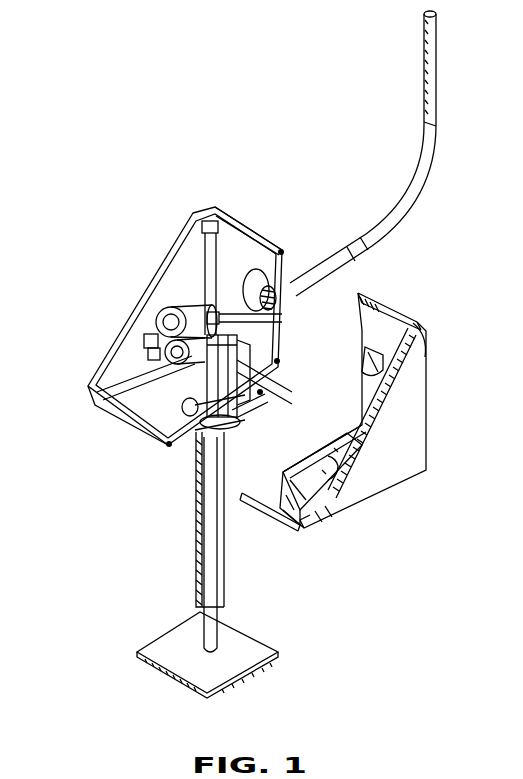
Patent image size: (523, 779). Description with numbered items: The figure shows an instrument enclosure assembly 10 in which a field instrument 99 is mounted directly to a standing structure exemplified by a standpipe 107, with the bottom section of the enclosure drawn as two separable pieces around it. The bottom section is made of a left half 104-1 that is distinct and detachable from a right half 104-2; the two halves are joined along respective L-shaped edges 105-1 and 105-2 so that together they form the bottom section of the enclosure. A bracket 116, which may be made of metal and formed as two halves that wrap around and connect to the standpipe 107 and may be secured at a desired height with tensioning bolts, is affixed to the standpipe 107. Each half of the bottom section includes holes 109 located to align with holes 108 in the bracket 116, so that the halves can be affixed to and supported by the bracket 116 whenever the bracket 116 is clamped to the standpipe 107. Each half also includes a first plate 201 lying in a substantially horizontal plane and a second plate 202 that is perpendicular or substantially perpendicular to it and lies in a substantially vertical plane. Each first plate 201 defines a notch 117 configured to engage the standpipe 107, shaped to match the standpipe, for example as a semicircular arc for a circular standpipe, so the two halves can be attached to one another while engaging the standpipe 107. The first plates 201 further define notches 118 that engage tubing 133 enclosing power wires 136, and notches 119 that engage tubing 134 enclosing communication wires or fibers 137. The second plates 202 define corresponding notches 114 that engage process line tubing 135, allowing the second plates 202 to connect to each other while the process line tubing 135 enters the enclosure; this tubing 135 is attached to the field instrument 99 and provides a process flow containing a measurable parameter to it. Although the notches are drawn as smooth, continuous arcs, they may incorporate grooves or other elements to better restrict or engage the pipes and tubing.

The instrument enclosure assembly 10 is at (372, 696).
The field instrument 99 is at (193, 300).
The left half 104-1 is at (134, 282).
The right half 104-2 is at (393, 507).
The L-shaped edge 105-1 is at (277, 332).
The L-shaped edge 105-2 is at (367, 312).
The standpipe 107 is at (218, 607).
The holes 108 is at (213, 423).
The holes 109 is at (330, 462).
The notches 114 is at (354, 360).
The bracket 116 is at (232, 420).
The notch 117 is at (305, 462).
The notches 118 is at (286, 472).
The notches 119 is at (325, 455).
The tubing 133 is at (196, 565).
The tubing 134 is at (224, 576).
The process line tubing 135 is at (437, 60).
The power wires 136 is at (187, 387).
The communication wires or fibers 137 is at (237, 372).
The first plate 201 is at (133, 412).
The second plate 202 is at (236, 242).